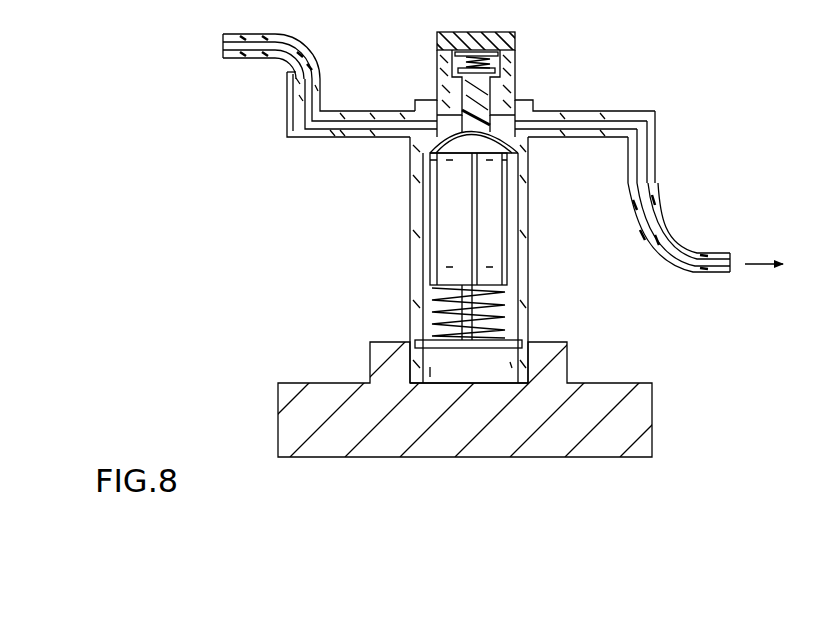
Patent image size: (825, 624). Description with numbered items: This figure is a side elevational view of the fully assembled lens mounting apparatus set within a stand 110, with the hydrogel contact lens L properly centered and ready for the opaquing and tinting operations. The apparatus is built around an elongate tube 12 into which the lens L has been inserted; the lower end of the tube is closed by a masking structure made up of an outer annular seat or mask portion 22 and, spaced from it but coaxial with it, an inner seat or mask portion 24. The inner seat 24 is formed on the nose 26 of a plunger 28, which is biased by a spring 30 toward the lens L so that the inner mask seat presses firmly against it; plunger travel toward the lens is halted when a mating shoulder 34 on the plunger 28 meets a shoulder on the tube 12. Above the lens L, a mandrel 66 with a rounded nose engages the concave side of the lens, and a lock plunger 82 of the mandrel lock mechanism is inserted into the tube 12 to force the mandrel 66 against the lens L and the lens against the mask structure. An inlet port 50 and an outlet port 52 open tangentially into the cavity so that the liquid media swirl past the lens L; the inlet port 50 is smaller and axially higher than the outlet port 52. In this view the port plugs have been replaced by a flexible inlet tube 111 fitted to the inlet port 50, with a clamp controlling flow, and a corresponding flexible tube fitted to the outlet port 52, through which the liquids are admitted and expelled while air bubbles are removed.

The flexible inlet tube 111 is at (243, 58).
The inlet port 50 is at (288, 128).
The nose 26 is at (533, 101).
The plunger 28 is at (456, 70).
The spring 30 is at (512, 70).
The mating shoulder 34 is at (500, 96).
The inner seat or mask portion 24 is at (503, 153).
The outer annular seat or mask portion 22 is at (442, 150).
The hydrogel contact lens L is at (453, 145).
The mandrel 66 is at (455, 234).
The elongate tube 12 is at (404, 277).
The plunger 82 is at (433, 318).
The outlet port 52 is at (660, 134).
The stand 110 is at (528, 447).